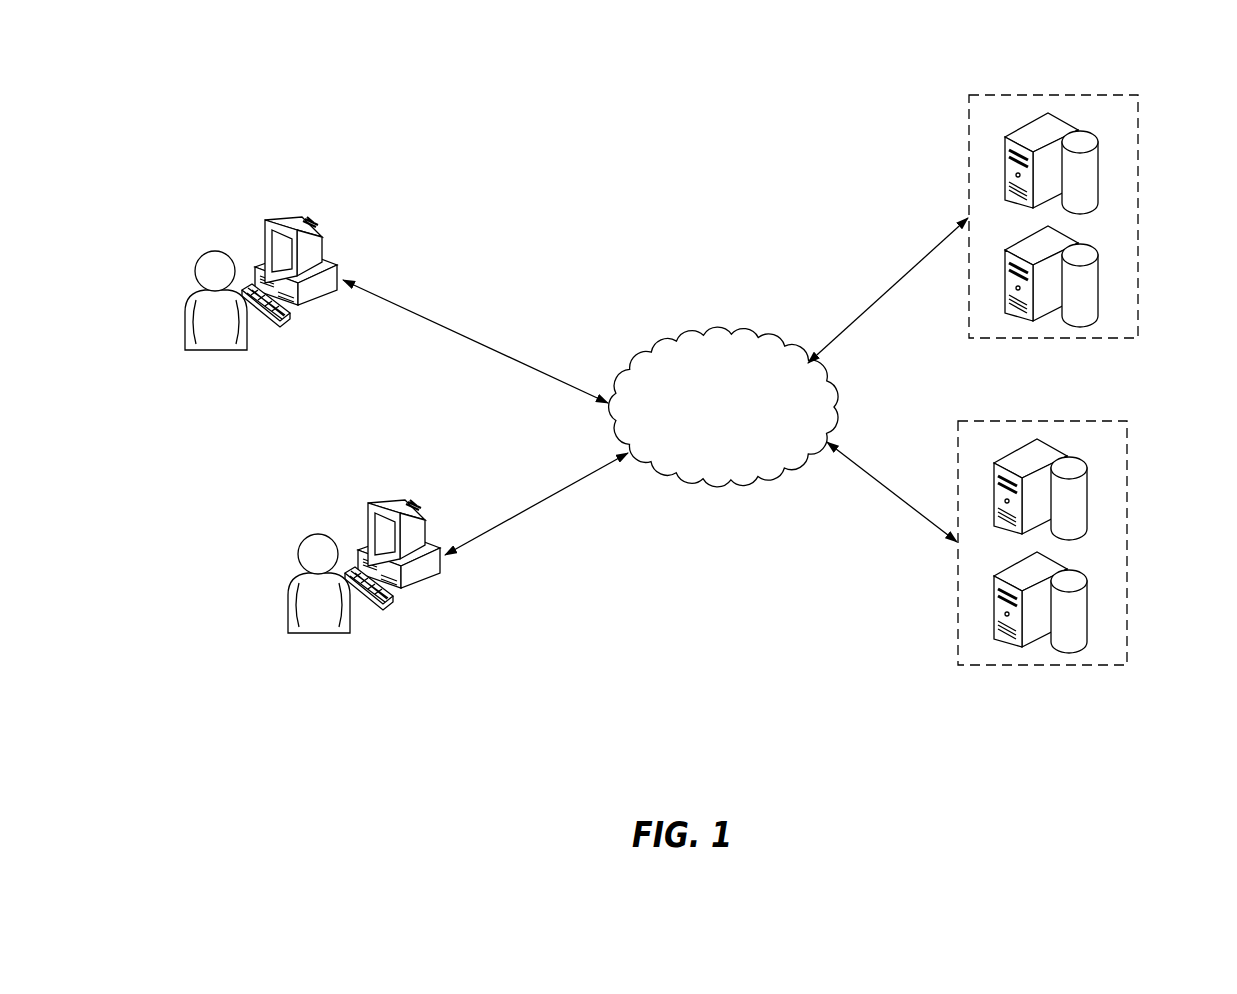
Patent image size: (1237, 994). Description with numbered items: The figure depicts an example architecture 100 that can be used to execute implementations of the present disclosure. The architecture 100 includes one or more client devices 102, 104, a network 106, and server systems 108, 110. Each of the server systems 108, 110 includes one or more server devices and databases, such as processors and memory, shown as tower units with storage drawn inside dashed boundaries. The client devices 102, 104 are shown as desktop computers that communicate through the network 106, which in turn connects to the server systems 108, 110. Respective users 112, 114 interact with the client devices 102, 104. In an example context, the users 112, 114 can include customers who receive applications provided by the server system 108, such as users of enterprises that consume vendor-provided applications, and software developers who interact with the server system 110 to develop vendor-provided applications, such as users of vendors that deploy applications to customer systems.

The example architecture 100 is at (575, 93).
The client device 102 is at (263, 228).
The client device 104 is at (368, 511).
The network 106 is at (723, 334).
The server system 108 is at (1138, 218).
The server system 110 is at (1127, 543).
The user 112 is at (215, 349).
The user 114 is at (318, 632).